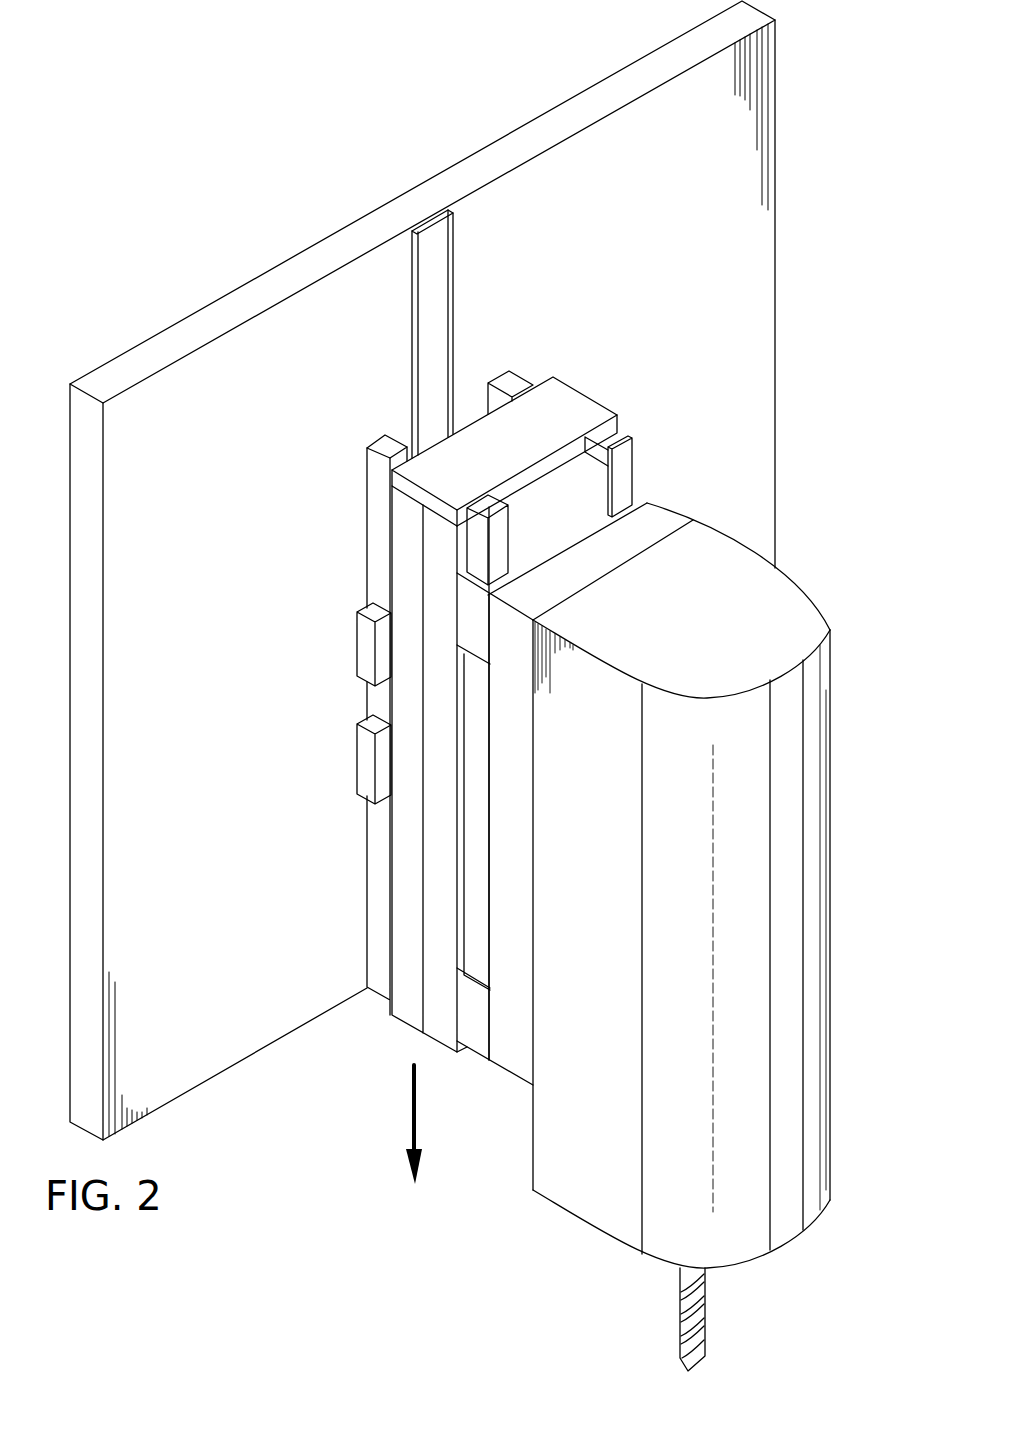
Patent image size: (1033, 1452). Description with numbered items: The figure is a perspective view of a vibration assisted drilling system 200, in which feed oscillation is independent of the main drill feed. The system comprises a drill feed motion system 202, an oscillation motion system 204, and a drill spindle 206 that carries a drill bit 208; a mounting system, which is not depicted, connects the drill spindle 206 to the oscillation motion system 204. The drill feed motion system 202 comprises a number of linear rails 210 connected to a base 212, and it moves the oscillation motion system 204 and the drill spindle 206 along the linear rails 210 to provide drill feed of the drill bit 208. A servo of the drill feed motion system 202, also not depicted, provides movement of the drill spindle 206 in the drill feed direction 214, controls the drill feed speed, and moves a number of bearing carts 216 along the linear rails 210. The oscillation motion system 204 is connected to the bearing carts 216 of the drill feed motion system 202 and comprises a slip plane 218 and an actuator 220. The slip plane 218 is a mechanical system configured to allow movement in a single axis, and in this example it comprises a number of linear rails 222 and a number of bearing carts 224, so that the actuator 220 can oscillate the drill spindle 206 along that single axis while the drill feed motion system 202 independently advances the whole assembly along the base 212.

The vibration assisted drilling system 200 is at (812, 404).
The drill feed motion system 202 is at (369, 412).
The oscillation motion system 204 is at (588, 374).
The drill spindle 206 is at (790, 1247).
The drill bit 208 is at (707, 1322).
The number of linear rails 210 is at (377, 573).
The base 212 is at (775, 280).
The drill feed direction 214 is at (410, 1117).
The number of bearing carts 216 is at (407, 1015).
The slip plane 218 is at (534, 352).
The actuator 220 is at (603, 478).
The number of linear rails 222 is at (475, 537).
The number of bearing carts 224 is at (518, 1068).